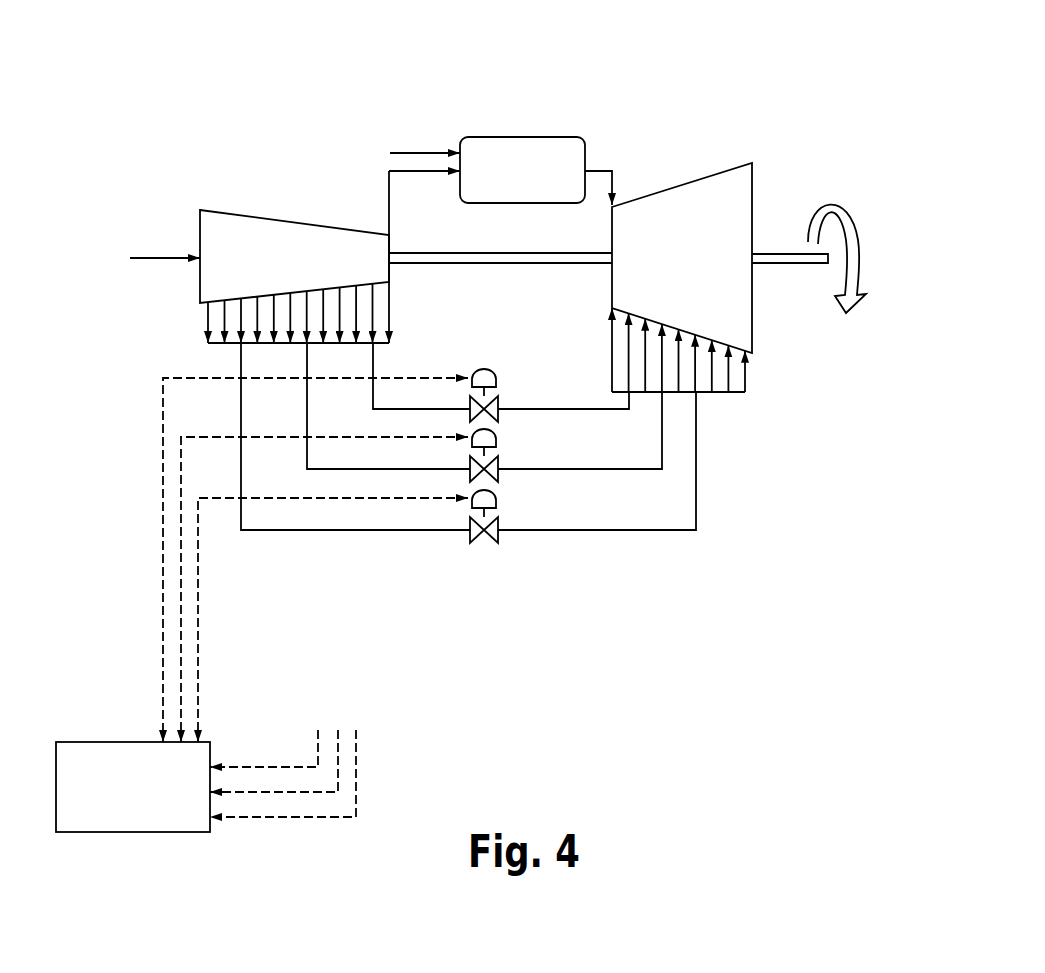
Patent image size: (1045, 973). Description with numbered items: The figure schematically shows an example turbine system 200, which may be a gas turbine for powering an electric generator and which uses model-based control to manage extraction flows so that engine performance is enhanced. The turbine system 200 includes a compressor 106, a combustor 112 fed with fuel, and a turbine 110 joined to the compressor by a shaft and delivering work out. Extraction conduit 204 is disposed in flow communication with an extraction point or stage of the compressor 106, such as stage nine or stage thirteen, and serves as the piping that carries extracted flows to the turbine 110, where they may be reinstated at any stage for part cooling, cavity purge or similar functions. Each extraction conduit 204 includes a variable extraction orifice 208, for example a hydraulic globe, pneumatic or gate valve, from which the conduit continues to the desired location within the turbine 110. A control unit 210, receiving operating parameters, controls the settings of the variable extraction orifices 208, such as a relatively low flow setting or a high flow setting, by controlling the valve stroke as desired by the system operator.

The turbine system 200 is at (551, 93).
The compressor 106 is at (258, 251).
The combustor 112 is at (545, 187).
The turbine 110 is at (688, 236).
The extraction conduit 204 is at (592, 468).
The variable extraction orifice 208 is at (498, 404).
The control unit 210 is at (113, 820).